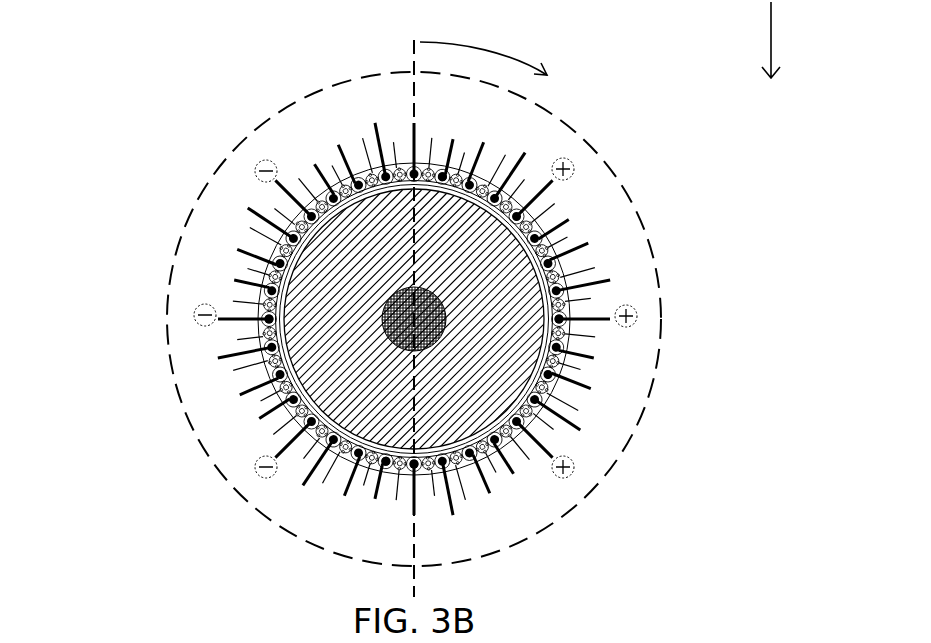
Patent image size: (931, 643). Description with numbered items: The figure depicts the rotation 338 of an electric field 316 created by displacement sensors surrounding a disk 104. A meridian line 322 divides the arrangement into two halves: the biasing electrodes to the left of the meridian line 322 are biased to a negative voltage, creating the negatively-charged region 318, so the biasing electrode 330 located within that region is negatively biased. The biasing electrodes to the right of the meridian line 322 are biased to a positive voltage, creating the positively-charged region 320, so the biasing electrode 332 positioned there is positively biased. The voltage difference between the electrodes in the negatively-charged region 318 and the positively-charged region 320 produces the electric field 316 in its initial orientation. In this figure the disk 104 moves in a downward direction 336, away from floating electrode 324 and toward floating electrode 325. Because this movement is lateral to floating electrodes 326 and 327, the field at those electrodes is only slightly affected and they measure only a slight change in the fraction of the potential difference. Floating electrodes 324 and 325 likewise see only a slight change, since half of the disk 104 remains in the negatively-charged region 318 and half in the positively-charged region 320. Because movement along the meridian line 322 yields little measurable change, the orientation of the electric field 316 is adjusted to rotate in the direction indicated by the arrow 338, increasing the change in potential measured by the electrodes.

The disk 104 is at (362, 243).
The electric field 316 is at (248, 137).
The negatively-charged region 318 is at (231, 319).
The positively-charged region 320 is at (598, 318).
The meridian line 322 is at (417, 583).
The floating electrode 324 is at (443, 174).
The floating electrode 325 is at (413, 465).
The floating electrode 326 is at (268, 320).
The floating electrode 327 is at (559, 318).
The biasing electrode 330 is at (387, 462).
The biasing electrode 332 is at (476, 166).
The downward direction 336 is at (792, 40).
The rotation 338 is at (487, 51).